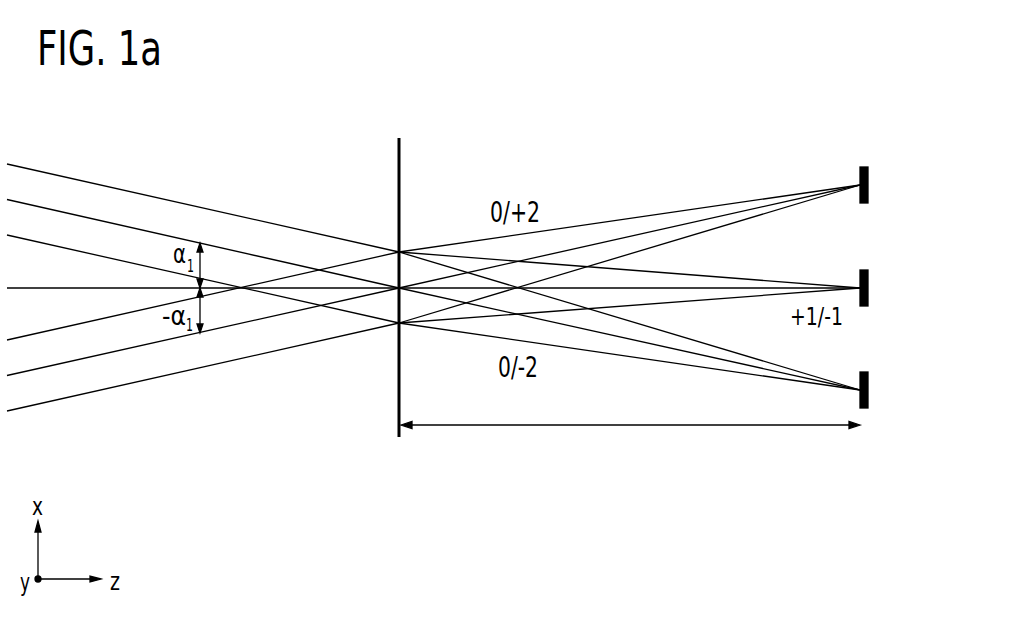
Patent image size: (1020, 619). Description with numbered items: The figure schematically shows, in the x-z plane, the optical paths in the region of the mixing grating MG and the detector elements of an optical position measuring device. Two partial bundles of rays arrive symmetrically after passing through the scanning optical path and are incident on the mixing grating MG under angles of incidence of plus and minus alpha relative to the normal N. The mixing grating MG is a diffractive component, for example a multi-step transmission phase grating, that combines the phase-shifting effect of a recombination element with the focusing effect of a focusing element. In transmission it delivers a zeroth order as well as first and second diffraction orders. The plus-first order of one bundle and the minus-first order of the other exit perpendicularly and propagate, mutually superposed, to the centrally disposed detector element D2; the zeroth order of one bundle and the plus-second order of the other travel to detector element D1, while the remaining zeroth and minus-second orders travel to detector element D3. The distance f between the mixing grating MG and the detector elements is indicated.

The mixing grating MG is at (404, 152).
The normal N is at (13, 290).
The detector element D1 is at (868, 185).
The detector element D2 is at (868, 288).
The detector element D3 is at (868, 390).
The focal length f is at (630, 409).